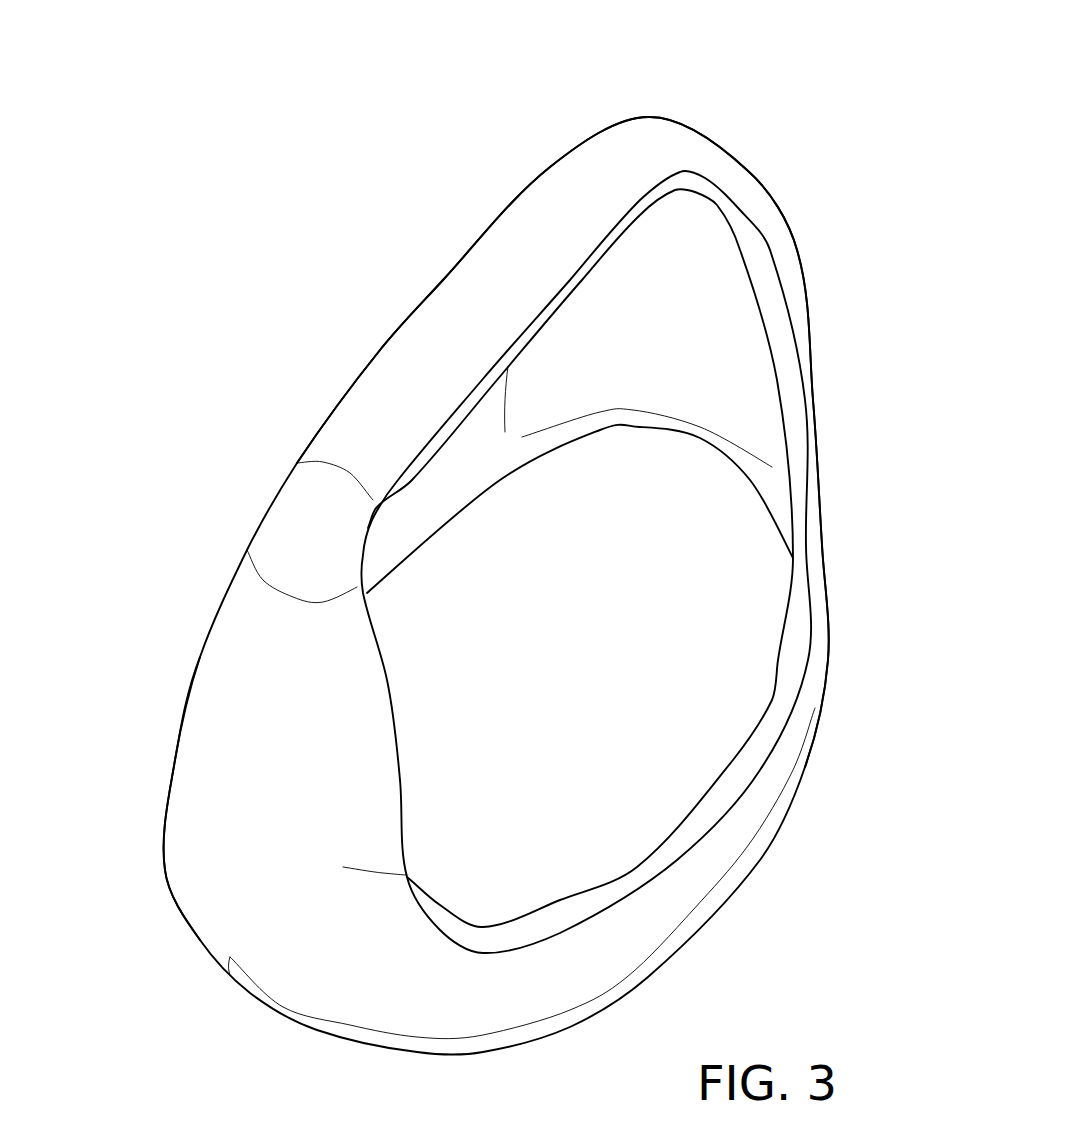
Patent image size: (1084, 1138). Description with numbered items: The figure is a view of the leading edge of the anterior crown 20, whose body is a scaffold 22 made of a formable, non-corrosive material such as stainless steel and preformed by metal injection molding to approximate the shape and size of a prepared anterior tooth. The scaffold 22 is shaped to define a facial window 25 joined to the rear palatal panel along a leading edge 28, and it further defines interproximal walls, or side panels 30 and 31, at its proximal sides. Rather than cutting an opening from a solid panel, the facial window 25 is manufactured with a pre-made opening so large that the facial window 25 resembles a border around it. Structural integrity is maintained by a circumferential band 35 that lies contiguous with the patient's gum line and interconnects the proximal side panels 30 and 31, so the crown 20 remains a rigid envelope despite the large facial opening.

The anterior crown 20 is at (820, 73).
The scaffold 22 is at (190, 765).
The facial window 25 is at (815, 545).
The leading edge 28 is at (465, 253).
The side panel 30 is at (165, 870).
The side panel 31 is at (813, 383).
The circumferential band 35 is at (805, 767).